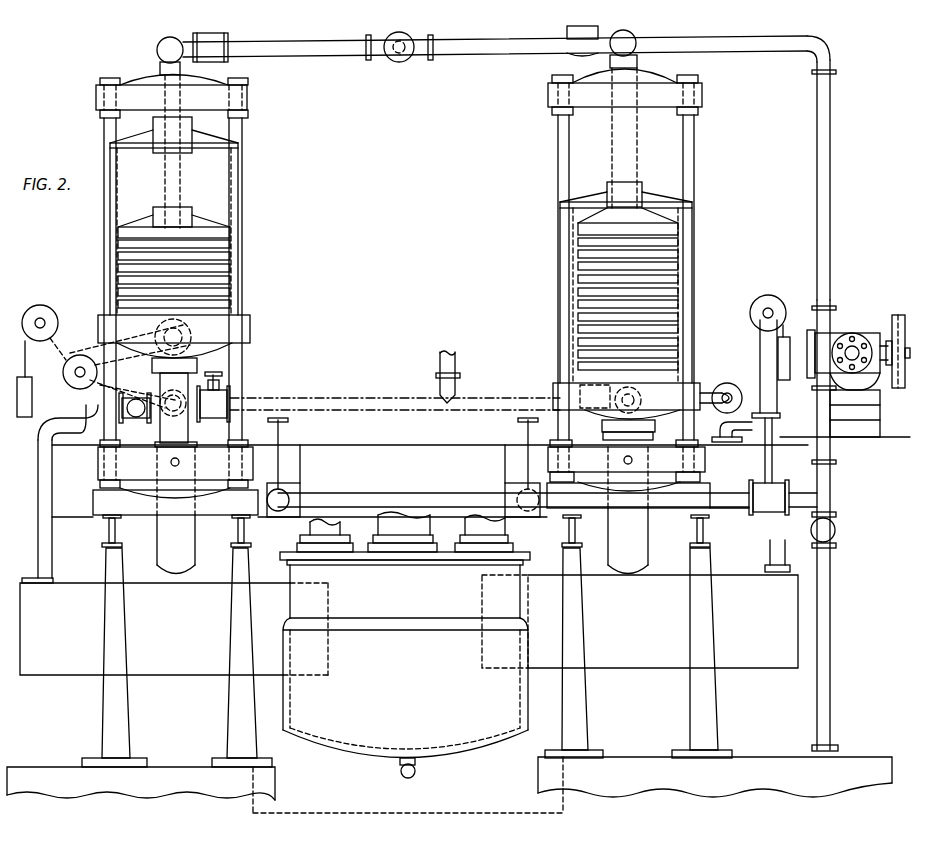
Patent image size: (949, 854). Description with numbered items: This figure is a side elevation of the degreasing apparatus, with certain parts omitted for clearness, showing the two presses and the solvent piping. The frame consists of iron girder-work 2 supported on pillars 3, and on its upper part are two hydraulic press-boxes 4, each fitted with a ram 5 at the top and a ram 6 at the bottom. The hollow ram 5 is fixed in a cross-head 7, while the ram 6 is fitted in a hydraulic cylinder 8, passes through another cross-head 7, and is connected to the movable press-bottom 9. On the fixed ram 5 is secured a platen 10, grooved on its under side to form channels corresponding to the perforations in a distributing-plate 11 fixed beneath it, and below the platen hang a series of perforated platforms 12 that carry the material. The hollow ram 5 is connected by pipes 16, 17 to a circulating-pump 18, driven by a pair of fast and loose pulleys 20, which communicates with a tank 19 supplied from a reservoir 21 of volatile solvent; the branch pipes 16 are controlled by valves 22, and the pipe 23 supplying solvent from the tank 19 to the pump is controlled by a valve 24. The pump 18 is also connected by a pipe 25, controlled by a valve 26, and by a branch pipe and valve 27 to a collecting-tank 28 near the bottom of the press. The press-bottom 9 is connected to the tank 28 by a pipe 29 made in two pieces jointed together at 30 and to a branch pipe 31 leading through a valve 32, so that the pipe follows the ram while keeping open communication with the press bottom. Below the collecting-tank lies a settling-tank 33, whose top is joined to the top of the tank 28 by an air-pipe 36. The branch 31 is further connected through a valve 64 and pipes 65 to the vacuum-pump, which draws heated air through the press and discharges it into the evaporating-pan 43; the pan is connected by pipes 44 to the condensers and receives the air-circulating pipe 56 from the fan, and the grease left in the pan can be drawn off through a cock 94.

The iron girder-work 2 is at (116, 530).
The pillars 3 is at (407, 657).
The hydraulic press-box 4 is at (192, 136).
The ram 5 is at (398, 141).
The ram 6 is at (413, 402).
The cross-head 7 is at (400, 283).
The hydraulic cylinder 8 is at (402, 510).
The movable press-bottom 9 is at (399, 367).
The platen 10 is at (648, 220).
The distributing-plate 11 is at (398, 246).
The perforated platforms 12 is at (398, 310).
The branch pipes 16 is at (334, 56).
The pipe 17 is at (491, 54).
The circulating-pump 18 is at (834, 339).
The tank 19 is at (715, 777).
The fast and loose pulleys 20 is at (905, 340).
The reservoir 21 is at (141, 783).
The valves 22 is at (567, 36).
The pipe 23 is at (830, 455).
The valve 24 is at (835, 532).
The pipe 25 is at (734, 517).
The valve 26 is at (769, 497).
The branch pipe and valve 27 is at (290, 496).
The collecting-tank 28 is at (416, 491).
The pipe 29 is at (712, 391).
The joint 30 is at (76, 386).
The branch pipe 31 is at (92, 424).
The valve 32 is at (135, 420).
The settling-tank 33 is at (409, 625).
The air-pipe 36 is at (38, 478).
The evaporating-pan 43 is at (405, 655).
The pipes 44 is at (405, 533).
The pipe 56 is at (402, 532).
The valve 64 is at (213, 406).
The pipes 65 is at (311, 406).
The cock 94 is at (416, 773).